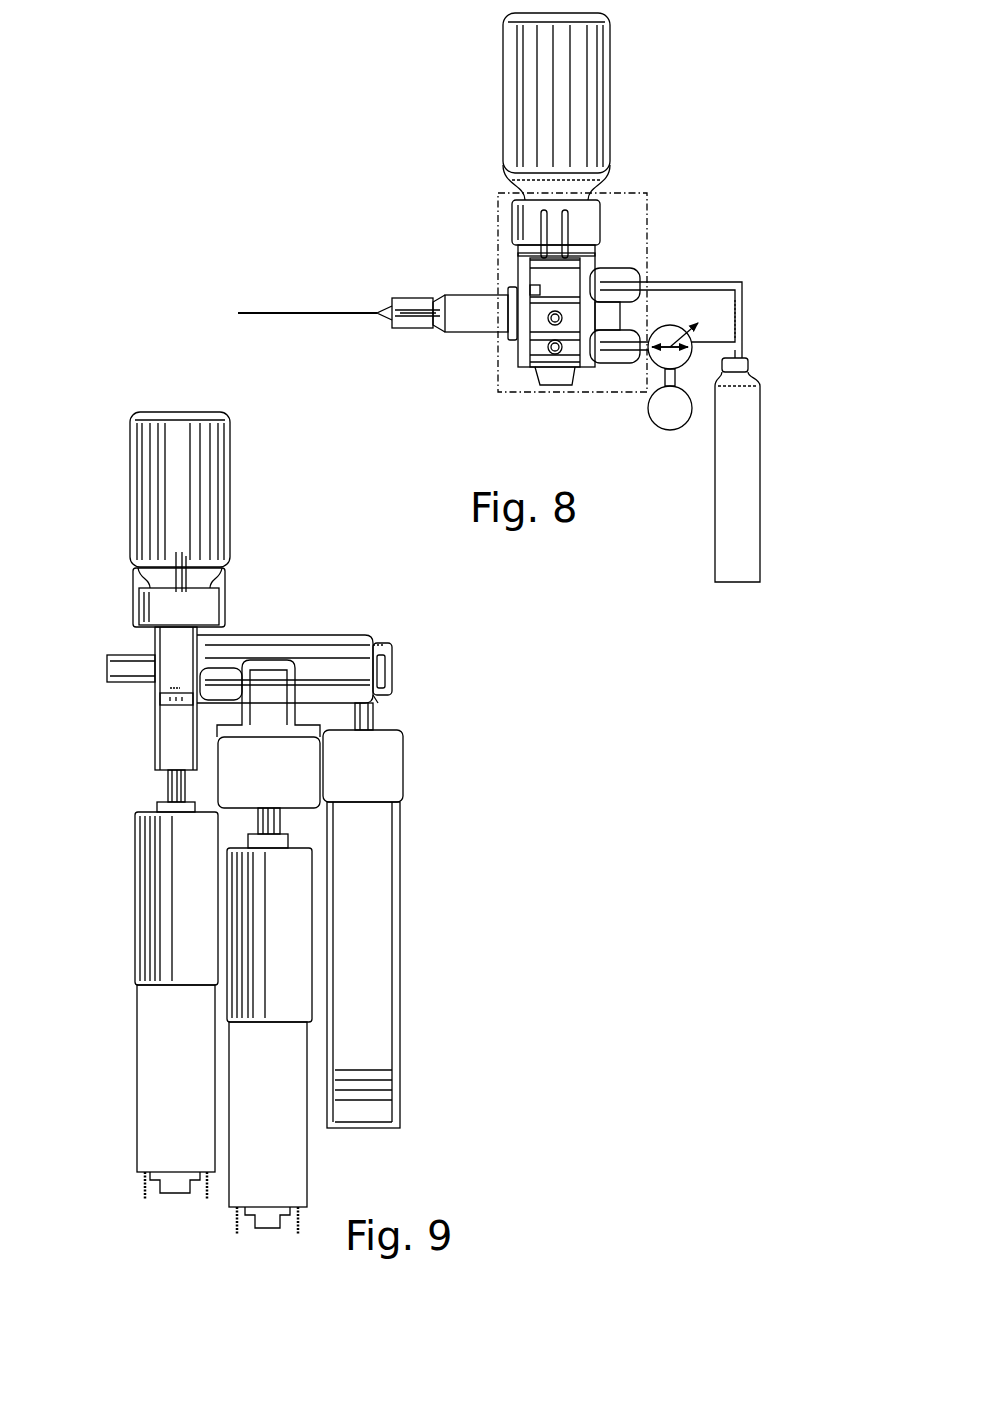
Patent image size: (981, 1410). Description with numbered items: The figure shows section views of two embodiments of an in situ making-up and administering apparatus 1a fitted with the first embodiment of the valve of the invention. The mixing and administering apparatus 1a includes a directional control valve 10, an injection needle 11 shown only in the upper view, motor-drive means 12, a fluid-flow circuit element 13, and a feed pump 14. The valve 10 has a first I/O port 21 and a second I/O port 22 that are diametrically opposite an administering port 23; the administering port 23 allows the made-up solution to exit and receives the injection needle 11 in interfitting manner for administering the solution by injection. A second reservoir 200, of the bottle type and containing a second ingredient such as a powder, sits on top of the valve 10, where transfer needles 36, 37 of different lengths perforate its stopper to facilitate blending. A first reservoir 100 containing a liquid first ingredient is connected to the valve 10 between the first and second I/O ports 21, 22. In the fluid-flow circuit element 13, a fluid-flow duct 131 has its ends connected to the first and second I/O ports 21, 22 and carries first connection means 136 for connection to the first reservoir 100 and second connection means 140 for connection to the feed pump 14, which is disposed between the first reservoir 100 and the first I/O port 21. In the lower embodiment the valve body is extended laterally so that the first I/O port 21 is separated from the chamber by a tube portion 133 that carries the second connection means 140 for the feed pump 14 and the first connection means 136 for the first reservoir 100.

In FIG. 8, the mixing and administering apparatus 1a is at (395, 145).
In FIG. 9, the mixing and administering apparatus 1a is at (537, 853).
In FIG. 8, the second reservoir 200 is at (590, 110).
In FIG. 9, the second reservoir 200 is at (152, 472).
In FIG. 8, the transfer needle 37 is at (515, 200).
In FIG. 9, the transfer needle 37 is at (172, 565).
In FIG. 8, the transfer needle 36 is at (570, 225).
In FIG. 9, the transfer needle 36 is at (188, 580).
In FIG. 8, the valve 10 is at (598, 263).
In FIG. 9, the valve 10 is at (152, 704).
In FIG. 8, the injection needle 11 is at (305, 310).
In FIG. 8, the administering port 23 is at (508, 295).
In FIG. 9, the administering port 23 is at (107, 668).
In FIG. 8, the second I/O port 22 is at (645, 275).
In FIG. 9, the second I/O port 22 is at (345, 650).
In FIG. 8, the first I/O port 21 is at (612, 364).
In FIG. 9, the first I/O port 21 is at (380, 700).
In FIG. 8, the fluid-flow circuit element 13 is at (715, 280).
In FIG. 9, the fluid-flow circuit element 13 is at (393, 640).
In FIG. 8, the fluid-flow duct 131 is at (745, 312).
In FIG. 9, the fluid-flow duct 131 is at (392, 667).
In FIG. 9, the tube portion 133 is at (300, 660).
In FIG. 8, the first connection means 136 is at (750, 352).
In FIG. 9, the first connection means 136 is at (410, 780).
In FIG. 8, the second connection means 140 is at (660, 382).
In FIG. 9, the second connection means 140 is at (212, 788).
In FIG. 9, the first reservoir 100 is at (383, 945).
In FIG. 9, the motor-drive means 12 is at (160, 1107).
In FIG. 9, the feed pump 14 is at (283, 1143).